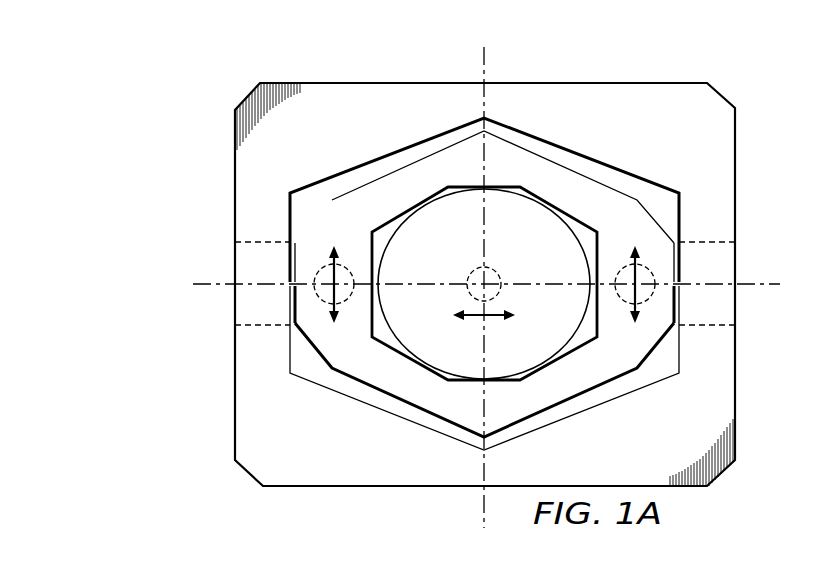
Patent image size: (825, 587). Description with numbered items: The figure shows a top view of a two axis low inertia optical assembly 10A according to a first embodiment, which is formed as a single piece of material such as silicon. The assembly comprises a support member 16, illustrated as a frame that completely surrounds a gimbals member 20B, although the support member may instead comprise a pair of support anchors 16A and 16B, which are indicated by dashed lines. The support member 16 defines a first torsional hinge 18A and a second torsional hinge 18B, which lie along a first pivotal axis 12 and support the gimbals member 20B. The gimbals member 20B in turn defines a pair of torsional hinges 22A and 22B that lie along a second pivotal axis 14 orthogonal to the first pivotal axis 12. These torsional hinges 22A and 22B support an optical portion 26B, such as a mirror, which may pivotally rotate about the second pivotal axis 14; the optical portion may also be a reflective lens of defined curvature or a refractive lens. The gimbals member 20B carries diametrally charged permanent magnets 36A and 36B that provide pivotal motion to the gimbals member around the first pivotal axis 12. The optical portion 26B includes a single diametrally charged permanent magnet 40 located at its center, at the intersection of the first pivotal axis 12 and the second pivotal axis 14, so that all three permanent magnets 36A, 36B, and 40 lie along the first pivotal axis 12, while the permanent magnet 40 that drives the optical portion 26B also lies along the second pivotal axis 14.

The assembly 10A is at (202, 116).
The first pivotal axis 12 is at (765, 283).
The second pivotal axis 14 is at (486, 58).
The support member 16 is at (234, 175).
The support anchor 16A is at (237, 303).
The support anchor 16B is at (727, 302).
The first torsional hinge 18A is at (288, 288).
The second torsional hinge 18B is at (683, 288).
The gimbals member 20B is at (608, 185).
The torsional hinge 22A is at (480, 386).
The torsional hinge 22B is at (477, 186).
The optical portion 26B is at (573, 348).
The diametrally charged permanent magnet 36A is at (354, 290).
The diametrally charged permanent magnet 36B is at (615, 279).
The diametrally charged permanent magnet 40 is at (467, 277).